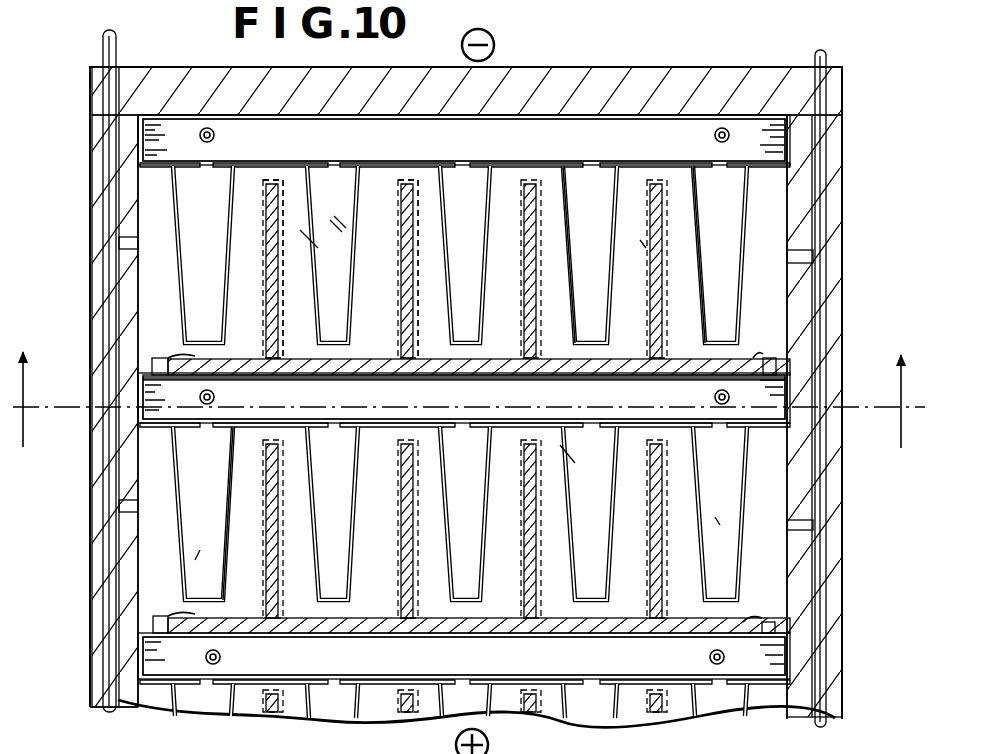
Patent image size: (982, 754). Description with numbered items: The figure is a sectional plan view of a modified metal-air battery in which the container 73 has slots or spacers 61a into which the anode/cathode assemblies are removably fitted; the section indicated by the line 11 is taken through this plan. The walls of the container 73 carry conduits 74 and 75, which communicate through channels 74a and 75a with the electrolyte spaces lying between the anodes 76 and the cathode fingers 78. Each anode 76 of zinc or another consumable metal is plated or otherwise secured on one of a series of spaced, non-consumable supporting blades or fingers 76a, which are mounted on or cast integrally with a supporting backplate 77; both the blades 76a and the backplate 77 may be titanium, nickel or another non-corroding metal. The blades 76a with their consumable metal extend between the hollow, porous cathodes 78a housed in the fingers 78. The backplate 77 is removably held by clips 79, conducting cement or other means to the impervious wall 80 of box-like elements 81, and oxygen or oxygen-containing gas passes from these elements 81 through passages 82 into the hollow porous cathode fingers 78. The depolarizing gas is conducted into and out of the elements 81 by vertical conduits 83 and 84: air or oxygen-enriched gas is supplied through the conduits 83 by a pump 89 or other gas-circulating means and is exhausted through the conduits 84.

The container 73 is at (852, 227).
The conduit 74 is at (822, 52).
The channel 74a is at (805, 262).
The conduit 75 is at (112, 50).
The channel 75a is at (122, 258).
The slots or spacers 61a is at (140, 130).
The anode 76 is at (285, 192).
The supporting blades or fingers 76a is at (263, 206).
The supporting backplate 77 is at (490, 364).
The cathode finger 78 is at (770, 262).
The porous cathode 78a is at (578, 190).
The clip 79 is at (172, 356).
The impervious wall 80 is at (524, 380).
The box-like element 81 is at (540, 135).
The passage 82 is at (333, 170).
The vertical conduit 83 is at (210, 128).
The vertical conduit 84 is at (728, 128).
The pump 89 is at (122, 730).
The section line 11 is at (463, 385).